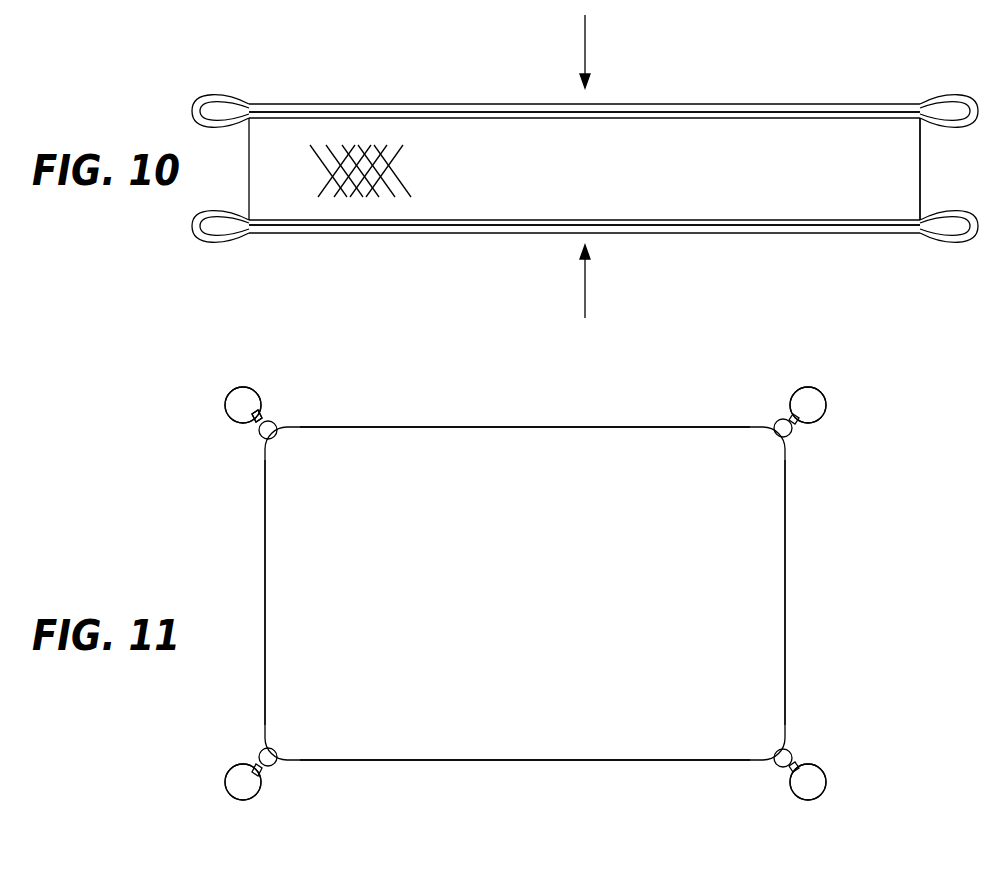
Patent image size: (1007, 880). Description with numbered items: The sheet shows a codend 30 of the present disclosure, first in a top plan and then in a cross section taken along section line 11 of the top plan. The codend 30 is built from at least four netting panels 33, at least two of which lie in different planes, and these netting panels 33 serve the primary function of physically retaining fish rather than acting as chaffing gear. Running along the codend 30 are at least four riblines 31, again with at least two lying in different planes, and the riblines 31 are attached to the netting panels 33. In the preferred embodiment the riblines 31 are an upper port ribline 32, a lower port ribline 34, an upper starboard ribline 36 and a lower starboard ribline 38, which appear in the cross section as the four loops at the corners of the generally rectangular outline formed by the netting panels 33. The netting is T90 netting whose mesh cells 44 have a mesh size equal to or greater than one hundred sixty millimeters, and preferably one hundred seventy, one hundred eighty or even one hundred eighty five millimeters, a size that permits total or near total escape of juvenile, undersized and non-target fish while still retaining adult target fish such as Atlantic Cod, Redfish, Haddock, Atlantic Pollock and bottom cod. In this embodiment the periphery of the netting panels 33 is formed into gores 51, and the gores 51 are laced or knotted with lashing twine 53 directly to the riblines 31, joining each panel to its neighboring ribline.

In FIG. 10, the section line 11 is at (587, 35).
In FIG. 10, the codend 30 is at (628, 104).
In FIG. 11, the codend 30 is at (520, 427).
In FIG. 10, the riblines 31 is at (757, 104).
In FIG. 11, the riblines 31 is at (258, 393).
In FIG. 11, the upper port ribline 32 is at (248, 388).
In FIG. 10, the netting panels 33 is at (924, 155).
In FIG. 11, the netting panels 33 is at (625, 427).
In FIG. 11, the lower port ribline 34 is at (238, 764).
In FIG. 11, the upper starboard ribline 36 is at (798, 389).
In FIG. 11, the lower starboard ribline 38 is at (822, 768).
In FIG. 10, the mesh cells 44 is at (382, 168).
In FIG. 10, the gores 51 is at (510, 122).
In FIG. 11, the gores 51 is at (277, 426).
In FIG. 11, the lashing twine 53 is at (252, 424).